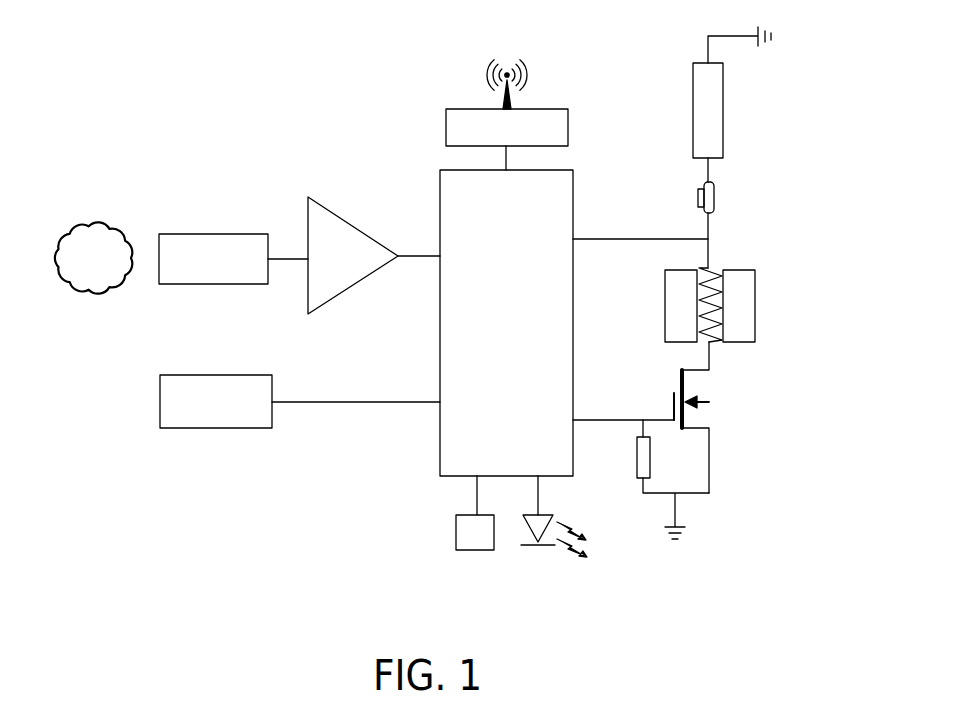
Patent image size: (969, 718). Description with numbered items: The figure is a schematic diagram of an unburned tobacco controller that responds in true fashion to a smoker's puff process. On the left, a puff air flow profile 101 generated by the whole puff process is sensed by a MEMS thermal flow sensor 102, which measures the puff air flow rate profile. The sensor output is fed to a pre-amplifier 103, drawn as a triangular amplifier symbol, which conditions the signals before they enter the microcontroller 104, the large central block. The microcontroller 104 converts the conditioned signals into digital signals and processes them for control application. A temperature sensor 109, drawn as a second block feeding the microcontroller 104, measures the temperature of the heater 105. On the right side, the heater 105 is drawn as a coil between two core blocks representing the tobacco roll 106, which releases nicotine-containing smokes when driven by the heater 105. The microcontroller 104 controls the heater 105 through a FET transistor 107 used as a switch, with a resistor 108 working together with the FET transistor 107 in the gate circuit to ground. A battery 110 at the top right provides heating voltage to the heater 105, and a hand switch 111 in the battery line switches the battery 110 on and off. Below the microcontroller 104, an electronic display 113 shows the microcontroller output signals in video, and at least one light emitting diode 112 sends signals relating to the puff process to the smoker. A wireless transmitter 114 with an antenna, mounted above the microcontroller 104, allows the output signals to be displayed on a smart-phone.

The puff air flow profile 101 is at (93, 253).
The MEMS thermal flow sensor 102 is at (207, 255).
The pre-amplifier 103 is at (343, 258).
The microcontroller 104 is at (518, 258).
The heater 105 is at (718, 330).
The tobacco roll 106 is at (685, 285).
The FET transistor 107 is at (685, 412).
The resistor 108 is at (653, 458).
The temperature sensor 109 is at (212, 405).
The battery 110 is at (733, 125).
The hand switch 111 is at (696, 200).
The light emitting diode 112 is at (538, 559).
The electronic display 113 is at (479, 556).
The wireless transmitter 114 is at (480, 135).